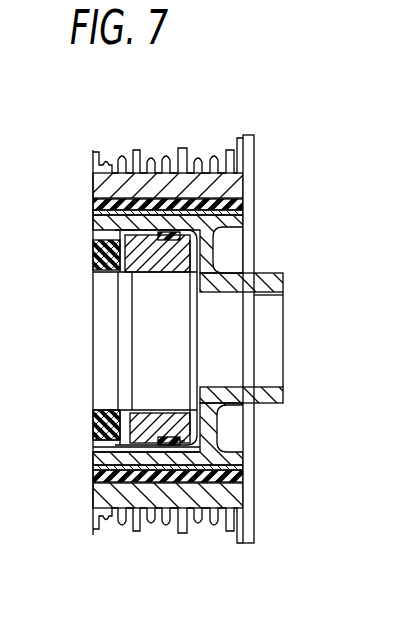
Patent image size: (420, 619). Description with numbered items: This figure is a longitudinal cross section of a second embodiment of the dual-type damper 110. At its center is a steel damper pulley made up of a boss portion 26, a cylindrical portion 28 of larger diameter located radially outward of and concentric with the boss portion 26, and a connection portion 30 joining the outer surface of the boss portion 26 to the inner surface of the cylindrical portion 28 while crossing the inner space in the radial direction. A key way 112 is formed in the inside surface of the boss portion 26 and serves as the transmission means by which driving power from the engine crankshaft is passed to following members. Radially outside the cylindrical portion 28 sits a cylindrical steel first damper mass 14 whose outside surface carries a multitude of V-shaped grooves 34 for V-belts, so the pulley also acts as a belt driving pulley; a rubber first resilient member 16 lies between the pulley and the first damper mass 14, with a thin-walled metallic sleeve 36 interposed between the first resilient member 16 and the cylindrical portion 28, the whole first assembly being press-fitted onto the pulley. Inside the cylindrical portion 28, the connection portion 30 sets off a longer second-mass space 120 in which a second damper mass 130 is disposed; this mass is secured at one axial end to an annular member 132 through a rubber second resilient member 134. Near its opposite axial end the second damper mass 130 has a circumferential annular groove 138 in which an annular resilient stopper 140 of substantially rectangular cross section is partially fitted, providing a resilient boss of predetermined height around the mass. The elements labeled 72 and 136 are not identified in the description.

The dual-type damper (second embodiment) 110 is at (256, 100).
The axle 72 is at (296, 342).
The V-shaped grooves 34 is at (109, 150).
The first damper mass 14 is at (243, 167).
The first resilient member 16 is at (240, 207).
The metallic sleeve 36 is at (93, 205).
The cylindrical portion 28 is at (93, 222).
The second resilient member 134 is at (93, 250).
The connection portion 30 is at (207, 263).
The boss portion 26 is at (283, 284).
The key way 112 is at (277, 295).
The second damper mass 130 is at (158, 266).
The second-mass space 120 is at (174, 353).
The annular groove 138 is at (160, 432).
The lower seal 136 is at (93, 425).
The annular member 132 is at (93, 438).
The annular resilient stopper 140 is at (182, 441).